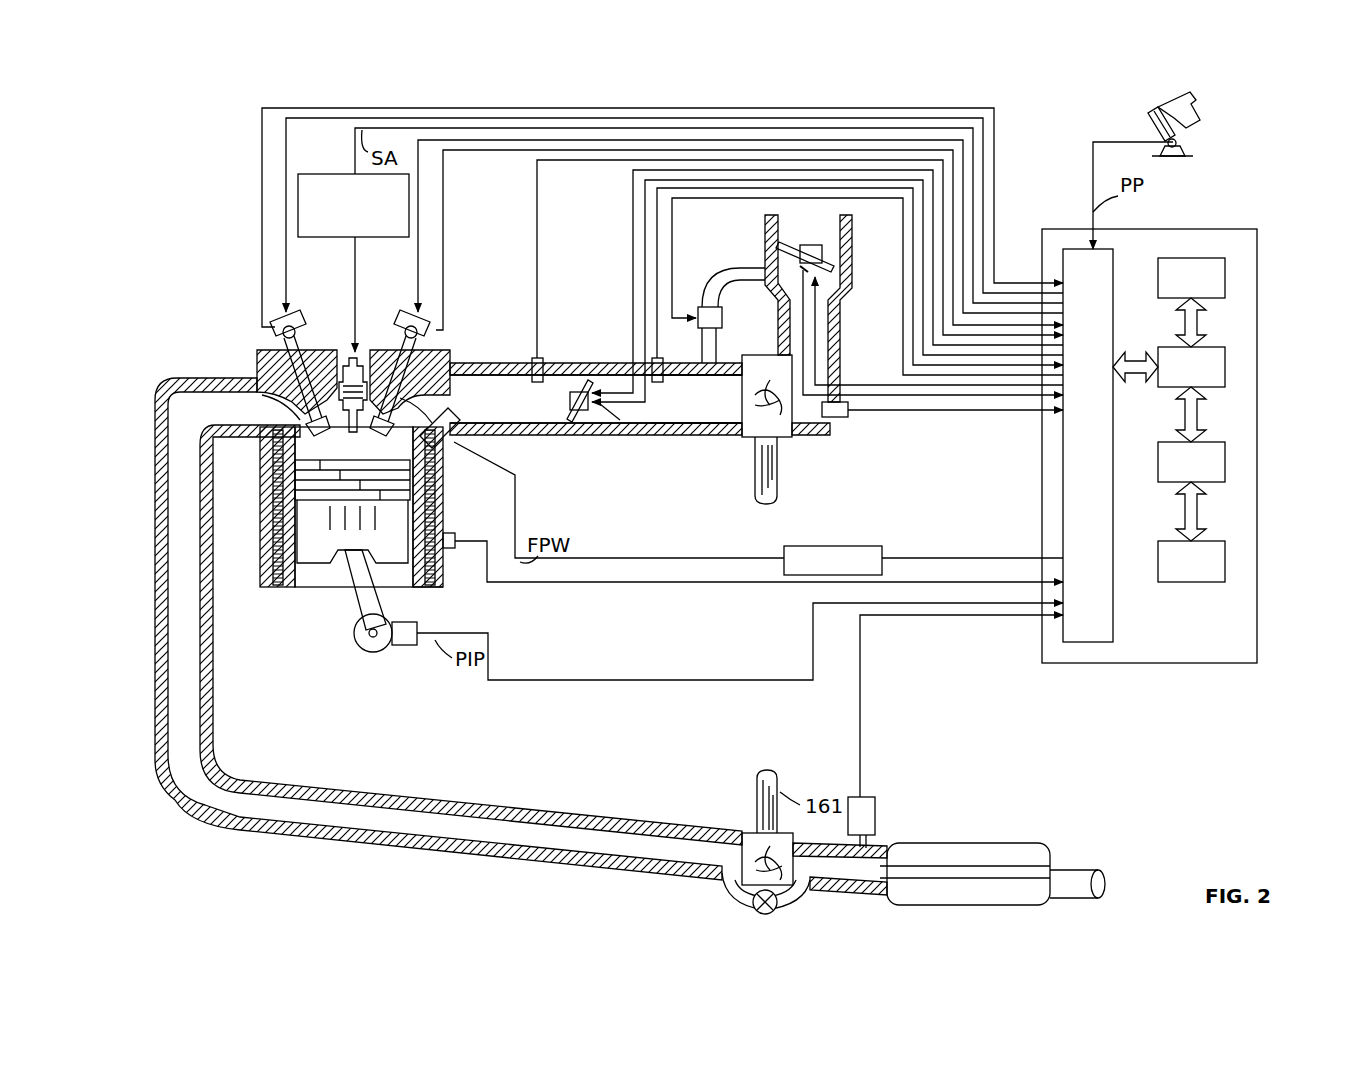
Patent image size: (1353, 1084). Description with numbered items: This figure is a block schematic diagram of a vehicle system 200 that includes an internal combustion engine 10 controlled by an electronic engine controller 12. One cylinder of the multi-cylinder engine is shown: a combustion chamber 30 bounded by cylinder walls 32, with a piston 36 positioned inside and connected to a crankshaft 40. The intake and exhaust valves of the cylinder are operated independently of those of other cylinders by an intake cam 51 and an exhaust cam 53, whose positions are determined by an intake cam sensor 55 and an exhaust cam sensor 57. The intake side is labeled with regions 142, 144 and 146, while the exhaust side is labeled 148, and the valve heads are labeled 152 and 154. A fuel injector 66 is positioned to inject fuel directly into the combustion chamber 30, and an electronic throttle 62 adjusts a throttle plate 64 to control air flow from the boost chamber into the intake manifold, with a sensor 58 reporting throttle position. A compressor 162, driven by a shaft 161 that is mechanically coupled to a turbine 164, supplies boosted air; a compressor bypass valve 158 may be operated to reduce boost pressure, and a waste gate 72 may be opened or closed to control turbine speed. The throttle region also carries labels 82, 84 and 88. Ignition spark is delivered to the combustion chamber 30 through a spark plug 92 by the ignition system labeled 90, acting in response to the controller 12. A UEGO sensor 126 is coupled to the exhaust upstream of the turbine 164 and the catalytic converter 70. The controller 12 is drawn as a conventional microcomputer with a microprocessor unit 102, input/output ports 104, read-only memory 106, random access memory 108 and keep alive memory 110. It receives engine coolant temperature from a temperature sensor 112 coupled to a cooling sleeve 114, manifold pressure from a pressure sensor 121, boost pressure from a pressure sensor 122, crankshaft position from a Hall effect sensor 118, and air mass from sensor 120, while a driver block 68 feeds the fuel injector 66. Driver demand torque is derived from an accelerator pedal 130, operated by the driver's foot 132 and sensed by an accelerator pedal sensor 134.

The vehicle system 200 is at (122, 145).
The internal combustion engine 10 is at (196, 305).
The electronic engine controller 12 is at (1257, 232).
The combustion chamber 30 is at (268, 545).
The cylinder walls 32 is at (292, 600).
The piston 36 is at (336, 545).
The crankshaft 40 is at (360, 650).
The intake cam 51 is at (397, 314).
The exhaust cam 53 is at (300, 312).
The intake cam sensor 55 is at (423, 340).
The exhaust cam sensor 57 is at (268, 334).
The throttle position sensor 58 is at (602, 404).
The electronic throttle 62 is at (578, 384).
The throttle plate 64 is at (585, 392).
The fuel injector 66 is at (440, 456).
The driver 68 is at (882, 562).
The catalytic converter 70 is at (896, 902).
The waste gate 72 is at (752, 905).
The air intake throttle plate 82 is at (784, 254).
The air intake throttle actuator 84 is at (790, 242).
The distributorless ignition system 88 is at (800, 268).
The ignition system 90 is at (310, 174).
The spark plug 92 is at (358, 354).
The microprocessor unit 102 is at (1225, 370).
The input/output ports 104 is at (1113, 262).
The read-only memory 106 is at (1225, 276).
The random access memory 108 is at (1227, 462).
The keep alive memory 110 is at (1225, 562).
The temperature sensor 112 is at (472, 531).
The cooling sleeve 114 is at (438, 588).
The Hall effect sensor 118 is at (405, 648).
The air mass sensor 120 is at (842, 418).
The pressure sensor 121 is at (532, 362).
The pressure sensor 122 is at (660, 362).
The Universal Exhaust Gas Oxygen sensor 126 is at (875, 805).
The accelerator pedal 130 is at (1152, 125).
The driver's foot 132 is at (1199, 115).
The accelerator pedal sensor 134 is at (1185, 143).
The air intake passage 142 is at (808, 325).
The intake manifold 144 is at (596, 399).
The intake passage 146 is at (696, 399).
The exhaust passage 148 is at (448, 629).
The intake valve 152 is at (398, 400).
The exhaust valve 154 is at (296, 388).
The compressor bypass valve 158 is at (705, 307).
The shaft 161 is at (756, 462).
The compressor 162 is at (786, 438).
The turbine 164 is at (748, 833).